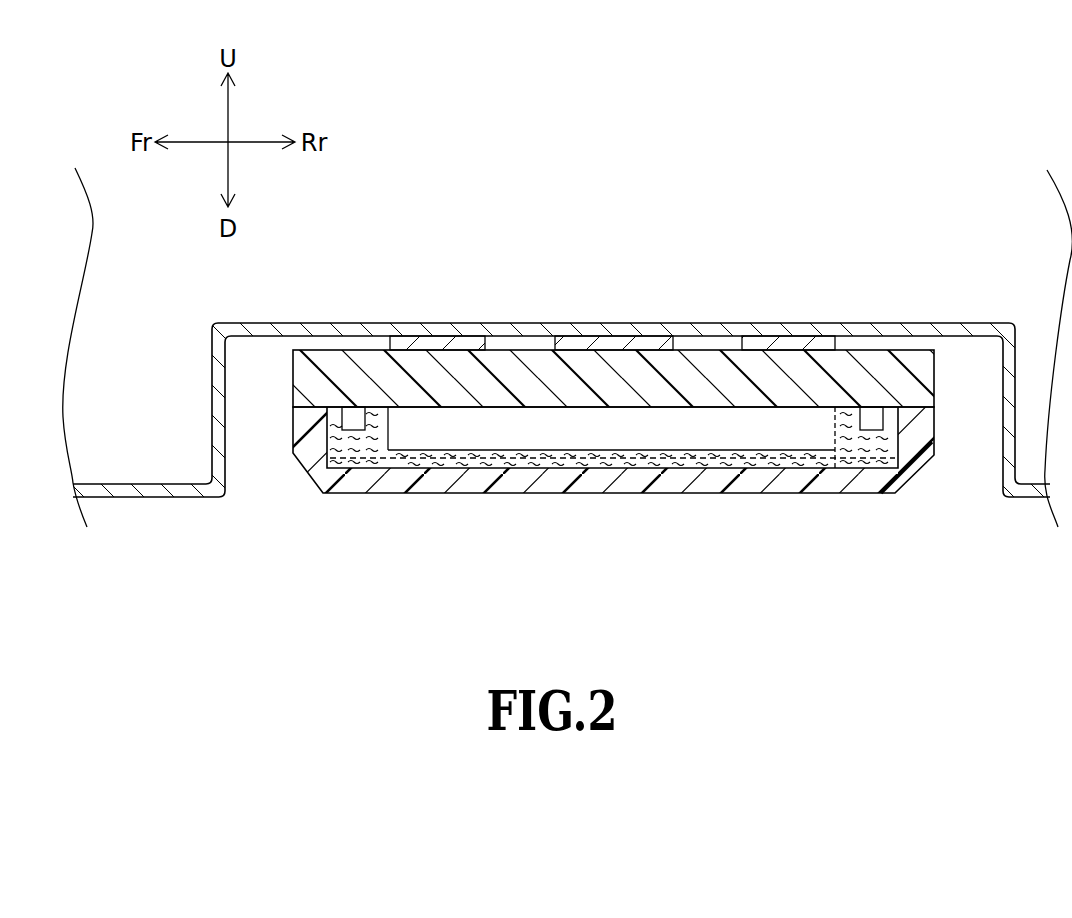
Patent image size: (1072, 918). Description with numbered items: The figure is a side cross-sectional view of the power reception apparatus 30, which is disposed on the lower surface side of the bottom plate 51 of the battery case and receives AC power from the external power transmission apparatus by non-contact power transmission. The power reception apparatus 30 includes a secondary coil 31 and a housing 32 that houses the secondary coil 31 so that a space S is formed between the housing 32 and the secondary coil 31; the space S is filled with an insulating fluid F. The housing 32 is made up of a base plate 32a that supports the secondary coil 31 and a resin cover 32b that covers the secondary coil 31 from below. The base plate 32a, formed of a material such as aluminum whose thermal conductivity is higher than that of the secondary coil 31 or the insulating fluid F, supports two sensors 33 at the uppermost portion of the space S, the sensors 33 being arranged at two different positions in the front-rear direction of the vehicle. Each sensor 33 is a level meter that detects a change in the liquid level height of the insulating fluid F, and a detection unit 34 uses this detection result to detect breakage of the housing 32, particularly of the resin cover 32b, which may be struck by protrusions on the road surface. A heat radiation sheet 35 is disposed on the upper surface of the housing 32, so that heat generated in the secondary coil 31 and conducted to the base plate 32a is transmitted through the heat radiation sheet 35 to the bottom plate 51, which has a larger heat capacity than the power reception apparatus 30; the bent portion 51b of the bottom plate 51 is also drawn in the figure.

The power reception apparatus 30 is at (663, 432).
The secondary coil 31 is at (735, 442).
The housing 32 is at (663, 469).
The base plate 32a is at (934, 378).
The resin cover 32b is at (987, 473).
The sensor 33 is at (352, 423).
The detection unit 34 is at (612, 342).
The heat radiation sheet 35 is at (423, 340).
The bottom plate 51 is at (130, 497).
The bent portion of panel 51b is at (228, 418).
The space S is at (866, 461).
The insulating fluid F is at (560, 460).